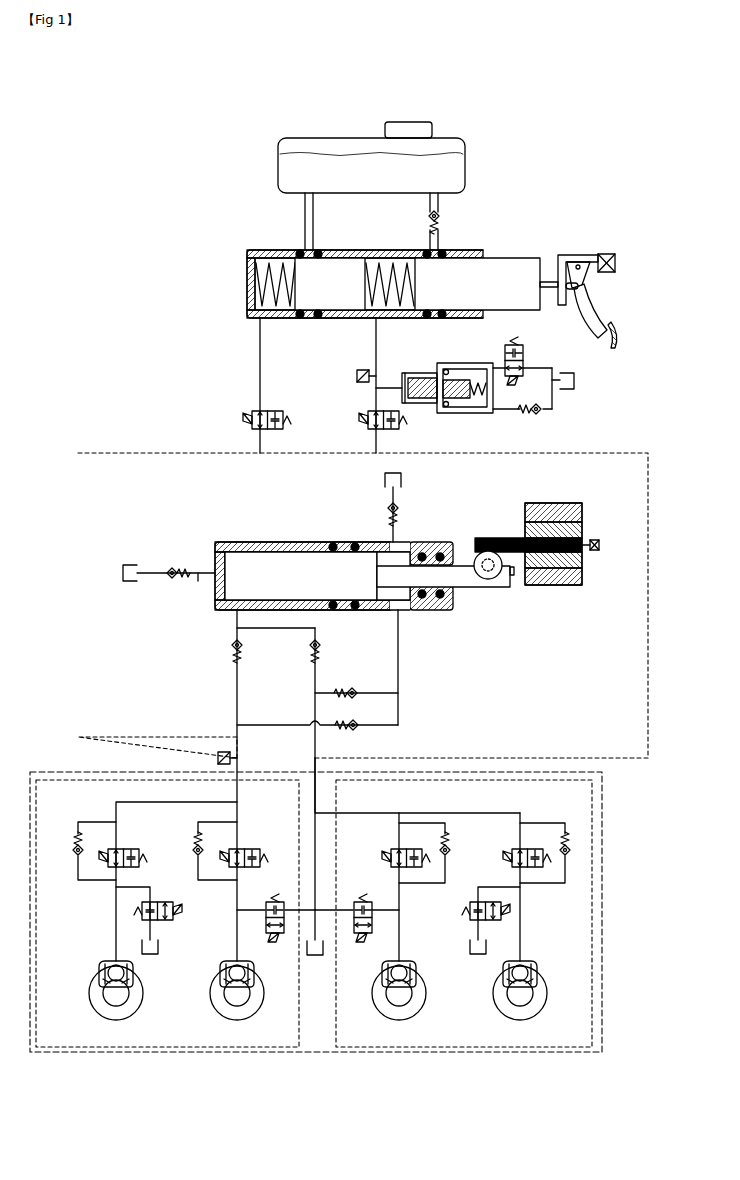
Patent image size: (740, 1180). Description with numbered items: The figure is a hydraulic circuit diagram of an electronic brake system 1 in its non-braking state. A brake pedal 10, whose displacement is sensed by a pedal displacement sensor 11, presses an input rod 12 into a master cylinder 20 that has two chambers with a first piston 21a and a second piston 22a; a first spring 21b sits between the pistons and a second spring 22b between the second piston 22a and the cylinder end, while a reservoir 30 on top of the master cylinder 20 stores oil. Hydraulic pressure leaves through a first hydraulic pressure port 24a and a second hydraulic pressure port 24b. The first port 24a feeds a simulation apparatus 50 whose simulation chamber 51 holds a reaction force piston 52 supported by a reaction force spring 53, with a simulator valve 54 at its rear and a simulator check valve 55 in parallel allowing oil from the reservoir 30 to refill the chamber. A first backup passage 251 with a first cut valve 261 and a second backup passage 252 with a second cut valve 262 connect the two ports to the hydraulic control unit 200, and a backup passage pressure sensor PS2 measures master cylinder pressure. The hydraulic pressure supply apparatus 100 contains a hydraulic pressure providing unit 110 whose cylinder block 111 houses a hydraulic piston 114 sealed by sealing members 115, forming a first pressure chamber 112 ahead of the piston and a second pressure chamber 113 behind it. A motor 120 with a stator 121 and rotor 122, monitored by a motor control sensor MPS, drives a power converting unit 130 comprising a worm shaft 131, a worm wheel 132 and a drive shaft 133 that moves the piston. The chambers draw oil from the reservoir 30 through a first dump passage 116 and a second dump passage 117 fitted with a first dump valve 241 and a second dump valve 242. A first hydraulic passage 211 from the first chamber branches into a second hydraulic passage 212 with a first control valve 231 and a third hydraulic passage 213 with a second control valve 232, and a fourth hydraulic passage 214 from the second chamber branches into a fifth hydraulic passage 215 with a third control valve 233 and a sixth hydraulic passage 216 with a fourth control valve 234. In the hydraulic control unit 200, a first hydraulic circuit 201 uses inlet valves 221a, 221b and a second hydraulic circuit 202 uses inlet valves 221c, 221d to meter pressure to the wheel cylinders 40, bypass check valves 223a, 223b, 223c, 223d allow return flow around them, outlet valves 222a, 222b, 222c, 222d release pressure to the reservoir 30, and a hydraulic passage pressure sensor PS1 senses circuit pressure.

The electronic brake system 1 is at (173, 113).
The brake pedal 10 is at (597, 296).
The pedal displacement sensor 11 is at (610, 255).
The input rod 12 is at (550, 282).
The master cylinder 20 is at (247, 270).
The first piston 21a is at (513, 266).
The first spring 21b is at (387, 318).
The second piston 22a is at (345, 262).
The second spring 22b is at (270, 296).
The first hydraulic pressure port 24a is at (373, 318).
The second hydraulic pressure port 24b is at (248, 318).
The reservoir 30 is at (302, 138).
The wheel cylinders 40 is at (134, 973).
The simulation apparatus 50 is at (468, 386).
The simulation chamber 51 is at (466, 363).
The reaction force piston 52 is at (425, 372).
The reaction force spring 53 is at (443, 366).
The simulator valve 54 is at (524, 352).
The simulator check valve 55 is at (535, 413).
The hydraulic pressure supply apparatus 100 is at (208, 500).
The hydraulic pressure providing unit 110 is at (325, 555).
The cylinder block 111 is at (290, 544).
The first pressure chamber 112 is at (257, 556).
The second pressure chamber 113 is at (432, 606).
The hydraulic piston 114 is at (366, 552).
The sealing members 115 is at (333, 543).
The first dump passage 116 is at (198, 581).
The second dump passage 117 is at (398, 530).
The motor 120 is at (572, 533).
The stator 121 is at (583, 577).
The rotor 122 is at (583, 561).
The power converting unit 130 is at (528, 553).
The worm shaft 131 is at (498, 538).
The worm wheel 132 is at (506, 576).
The drive shaft 133 is at (498, 590).
The hydraulic control unit 200 is at (343, 946).
The first hydraulic circuit 201 is at (464, 935).
The second hydraulic circuit 202 is at (263, 1052).
The first hydraulic passage 211 is at (232, 624).
The second hydraulic passage 212 is at (314, 628).
The third hydraulic passage 213 is at (237, 697).
The fourth hydraulic passage 214 is at (398, 623).
The fifth hydraulic passage 215 is at (375, 698).
The sixth hydraulic passage 216 is at (398, 726).
The inlet valve 221a is at (528, 848).
The inlet valve 221b is at (406, 848).
The inlet valve 221c is at (246, 848).
The inlet valve 221d is at (128, 848).
The outlet valve 222a is at (468, 911).
The outlet valve 222b is at (364, 900).
The outlet valve 222c is at (275, 901).
The outlet valve 222d is at (174, 918).
The check valve 223a is at (578, 848).
The check valve 223b is at (453, 852).
The check valve 223c is at (195, 855).
The check valve 223d is at (76, 833).
The first control valve 231 is at (320, 650).
The second control valve 232 is at (240, 652).
The third control valve 233 is at (350, 691).
The fourth control valve 234 is at (352, 730).
The first dump valve 241 is at (175, 570).
The second dump valve 242 is at (405, 512).
The first backup passage 251 is at (376, 357).
The second backup passage 252 is at (260, 356).
The first cut valve 261 is at (367, 412).
The second cut valve 262 is at (250, 419).
The hydraulic passage pressure sensor PS1 is at (218, 758).
The backup passage pressure sensor PS2 is at (357, 377).
The motor control sensor MPS is at (595, 539).